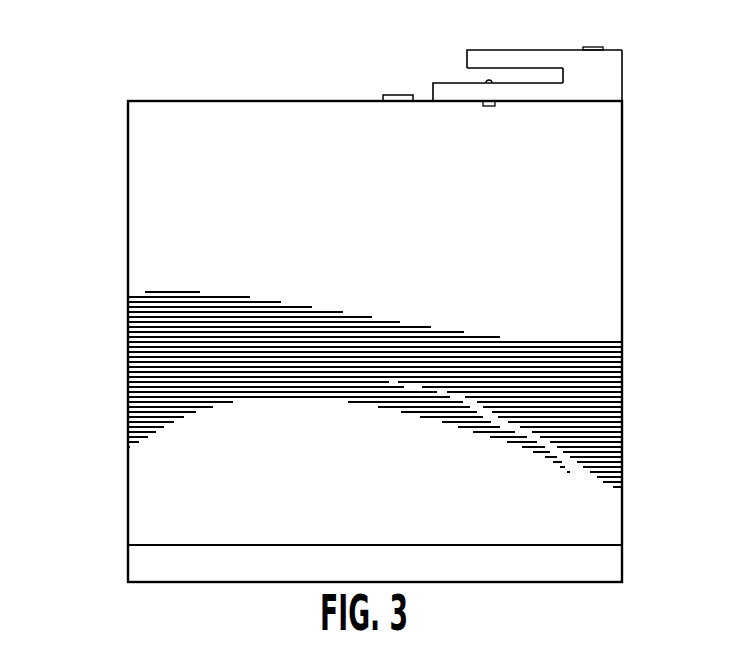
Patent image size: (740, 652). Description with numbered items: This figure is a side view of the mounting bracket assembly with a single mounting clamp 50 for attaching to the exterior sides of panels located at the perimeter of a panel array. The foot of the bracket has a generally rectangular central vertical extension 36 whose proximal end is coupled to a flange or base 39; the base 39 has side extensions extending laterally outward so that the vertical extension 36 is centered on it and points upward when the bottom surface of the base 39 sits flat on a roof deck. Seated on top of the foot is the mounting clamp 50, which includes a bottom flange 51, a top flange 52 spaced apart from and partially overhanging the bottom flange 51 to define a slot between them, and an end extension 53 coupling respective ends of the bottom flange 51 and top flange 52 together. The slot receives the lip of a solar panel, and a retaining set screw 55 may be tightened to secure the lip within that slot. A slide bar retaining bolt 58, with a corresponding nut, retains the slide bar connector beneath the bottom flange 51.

The central vertical extension portion 36 is at (100, 340).
The base 39 is at (650, 560).
The mounting clamp 50 is at (510, 99).
The bottom flange 51 is at (452, 83).
The top flange 52 is at (503, 50).
The end extension 53 is at (618, 79).
The retaining set screw 55 is at (490, 107).
The slide bar retaining bolt 58 is at (390, 95).